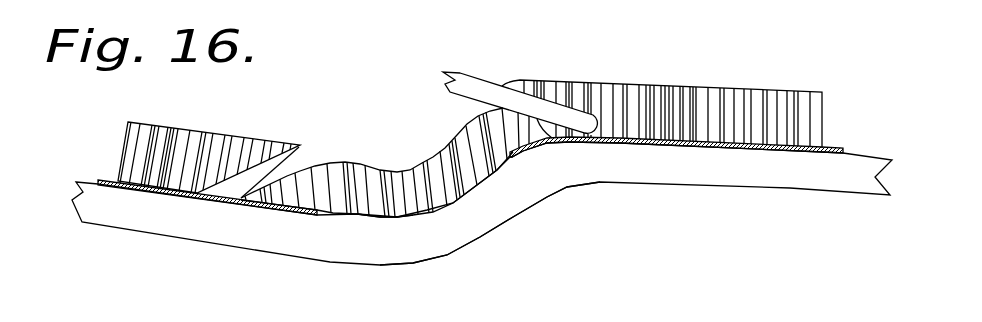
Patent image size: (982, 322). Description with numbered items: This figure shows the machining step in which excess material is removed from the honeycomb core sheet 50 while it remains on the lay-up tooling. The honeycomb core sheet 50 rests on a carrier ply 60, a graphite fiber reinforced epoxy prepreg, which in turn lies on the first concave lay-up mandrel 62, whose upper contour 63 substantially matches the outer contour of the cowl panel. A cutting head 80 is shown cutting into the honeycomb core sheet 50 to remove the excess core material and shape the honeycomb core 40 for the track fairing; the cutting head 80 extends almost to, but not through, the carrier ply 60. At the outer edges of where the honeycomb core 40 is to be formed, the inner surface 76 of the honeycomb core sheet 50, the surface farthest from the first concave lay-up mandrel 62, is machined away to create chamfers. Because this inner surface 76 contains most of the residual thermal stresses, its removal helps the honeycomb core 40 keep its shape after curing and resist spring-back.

The honeycomb core 40 is at (368, 167).
The honeycomb core sheet 50 is at (650, 92).
The carrier ply 60 is at (197, 196).
The first concave lay-up mandrel 62 is at (553, 183).
The upper contour 63 is at (393, 218).
The inner surface 76 is at (275, 140).
The cutting head 80 is at (466, 70).